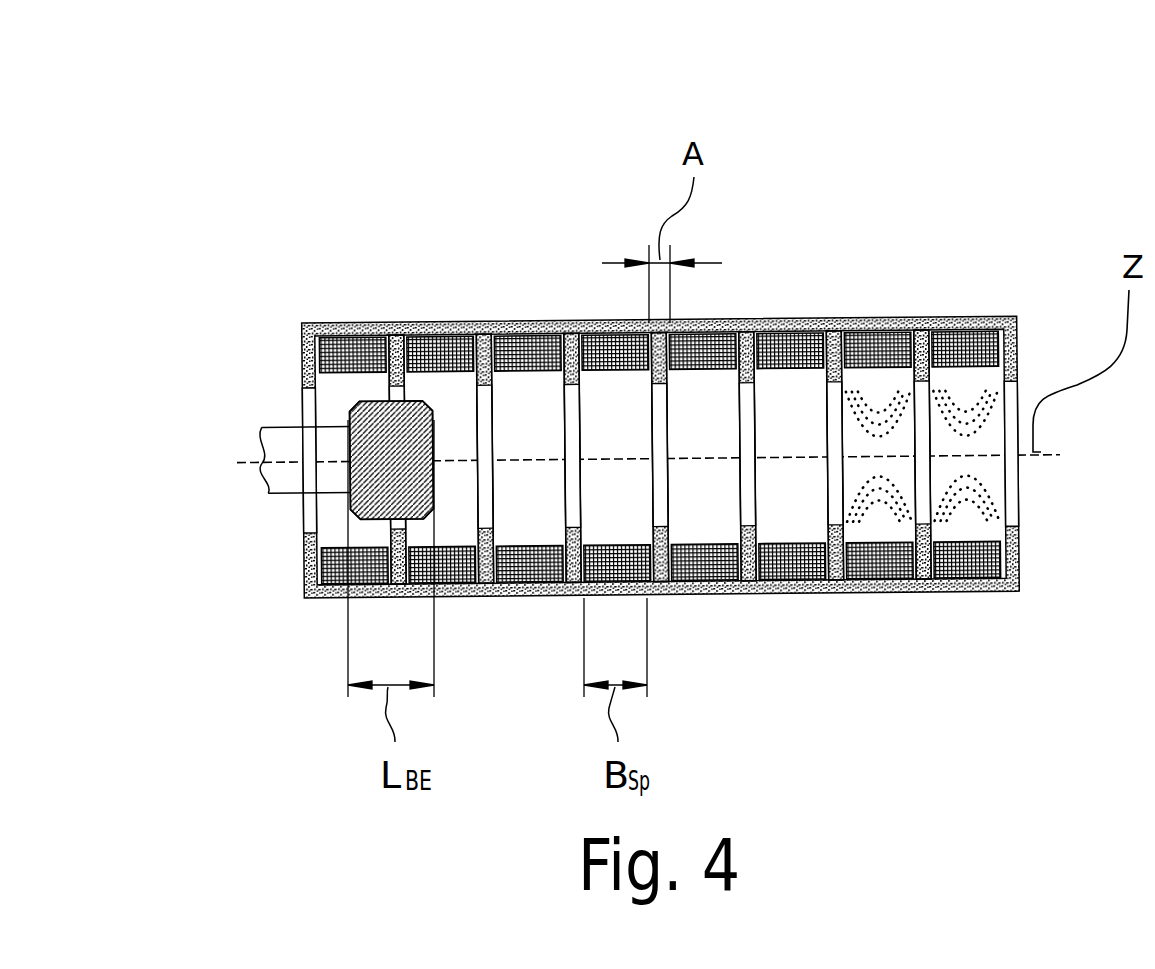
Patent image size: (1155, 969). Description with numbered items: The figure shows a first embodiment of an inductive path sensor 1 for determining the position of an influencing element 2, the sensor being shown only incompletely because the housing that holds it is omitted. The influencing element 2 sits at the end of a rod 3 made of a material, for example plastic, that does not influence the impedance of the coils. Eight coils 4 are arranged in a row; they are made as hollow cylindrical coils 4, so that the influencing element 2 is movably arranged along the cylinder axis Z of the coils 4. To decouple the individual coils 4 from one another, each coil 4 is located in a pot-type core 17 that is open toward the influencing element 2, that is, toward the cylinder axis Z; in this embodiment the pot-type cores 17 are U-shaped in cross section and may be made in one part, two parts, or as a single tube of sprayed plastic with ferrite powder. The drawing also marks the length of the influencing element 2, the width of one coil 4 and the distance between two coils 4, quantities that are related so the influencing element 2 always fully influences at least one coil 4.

The inductive path sensor 1 is at (546, 188).
The influencing element 2 is at (348, 480).
The rod 3 is at (282, 437).
The coils 4 is at (948, 345).
The pot-type core 17 is at (532, 322).